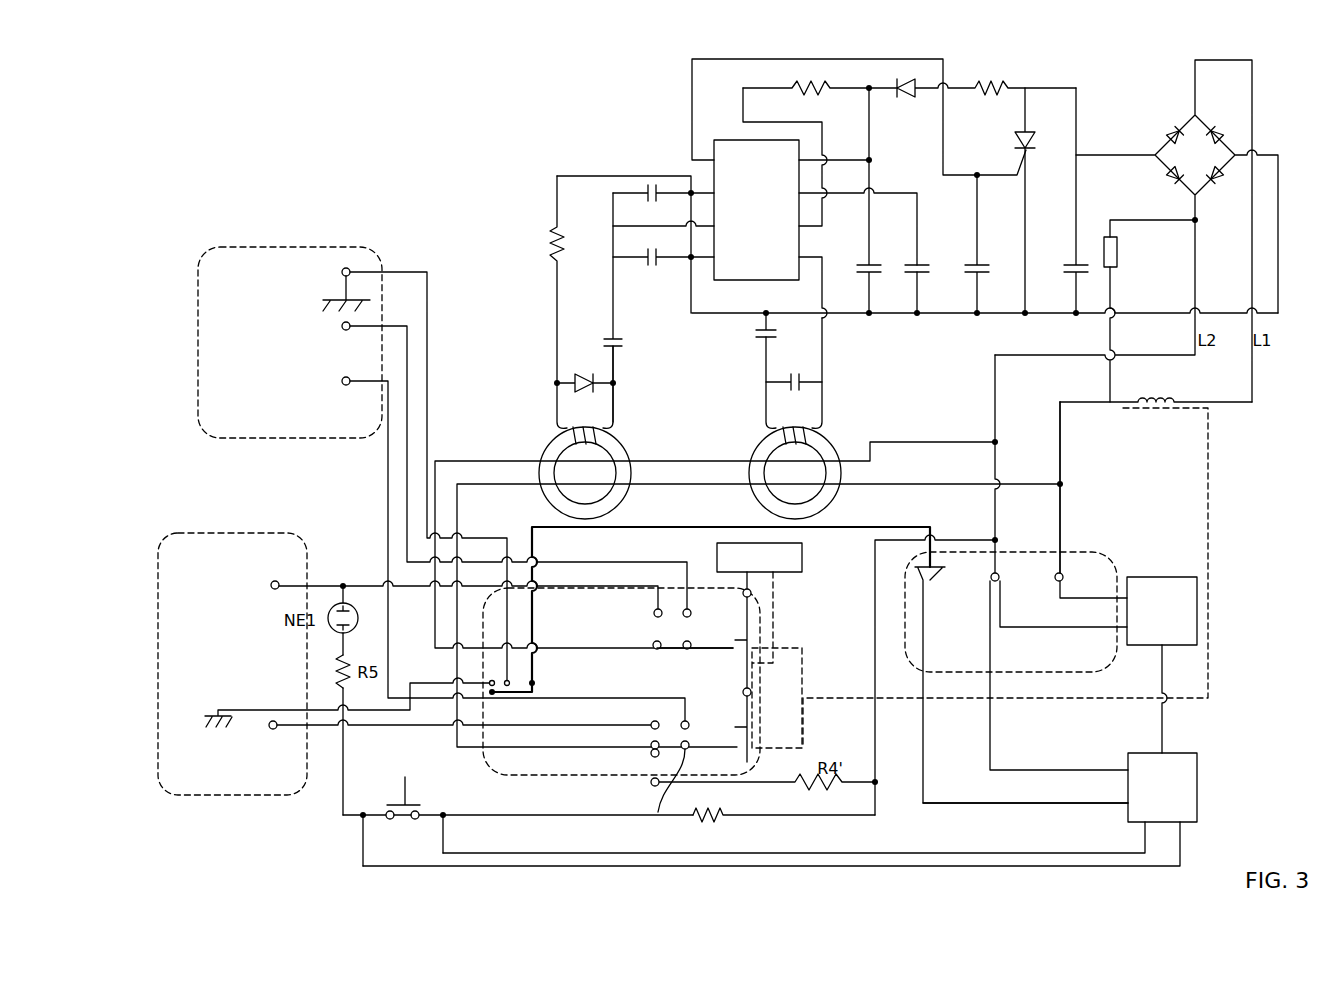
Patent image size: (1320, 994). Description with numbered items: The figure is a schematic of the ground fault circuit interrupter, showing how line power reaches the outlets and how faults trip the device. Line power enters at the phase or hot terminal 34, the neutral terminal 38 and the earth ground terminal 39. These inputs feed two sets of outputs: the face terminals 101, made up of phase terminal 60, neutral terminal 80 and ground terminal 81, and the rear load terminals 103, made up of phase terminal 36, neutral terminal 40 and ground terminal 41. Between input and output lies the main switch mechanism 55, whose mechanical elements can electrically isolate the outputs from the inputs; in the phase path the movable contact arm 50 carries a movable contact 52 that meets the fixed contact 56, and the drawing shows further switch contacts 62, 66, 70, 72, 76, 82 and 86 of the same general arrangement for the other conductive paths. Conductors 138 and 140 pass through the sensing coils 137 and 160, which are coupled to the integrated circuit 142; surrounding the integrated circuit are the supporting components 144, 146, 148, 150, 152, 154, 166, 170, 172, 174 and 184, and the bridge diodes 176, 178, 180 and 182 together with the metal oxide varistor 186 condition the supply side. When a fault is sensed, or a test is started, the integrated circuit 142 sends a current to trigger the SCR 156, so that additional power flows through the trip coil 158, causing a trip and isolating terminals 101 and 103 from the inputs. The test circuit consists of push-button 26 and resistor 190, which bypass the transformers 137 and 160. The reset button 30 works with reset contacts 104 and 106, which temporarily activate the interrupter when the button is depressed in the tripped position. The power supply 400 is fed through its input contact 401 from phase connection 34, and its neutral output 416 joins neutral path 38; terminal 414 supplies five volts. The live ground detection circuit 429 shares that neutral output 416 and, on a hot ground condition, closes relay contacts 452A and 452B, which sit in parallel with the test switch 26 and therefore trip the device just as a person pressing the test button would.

The test switch 26 is at (410, 798).
The reset button 30 is at (784, 576).
The phase line input terminal 34 is at (1063, 574).
The load phase terminal 36 is at (272, 730).
The neutral line input terminal 38 is at (1000, 560).
The earth ground terminal 39 is at (932, 582).
The load neutral terminal 40 is at (272, 580).
The load ground terminal 41 is at (210, 708).
The contact arm 50 is at (737, 749).
The movable contact 52 is at (651, 746).
The main switch mechanism 55 is at (768, 692).
The fixed contact 56 is at (653, 721).
The face phase terminal 60 is at (342, 384).
The conductor 62 is at (656, 814).
The contact 66 is at (689, 723).
The contact arm 70 is at (733, 649).
The contact 72 is at (652, 644).
The contact 76 is at (652, 611).
The face neutral terminal 80 is at (342, 329).
The face ground terminal 81 is at (342, 275).
The contact 82 is at (691, 643).
The contact 86 is at (691, 611).
The face terminals 101 is at (262, 246).
The load terminals 103 is at (217, 533).
The reset contact 104 is at (651, 754).
The reset contact 106 is at (651, 783).
The coil 137 is at (548, 434).
The phase conductor 138 is at (522, 485).
The neutral conductor 140 is at (500, 460).
The integrated circuit 142 is at (712, 158).
The diode 144 is at (586, 378).
The capacitor 146 is at (625, 345).
The capacitor 148 is at (651, 268).
The capacitor 150 is at (651, 186).
The resistor 152 is at (552, 240).
The capacitor 154 is at (914, 282).
The SCR 156 is at (1036, 140).
The trip coil 158 is at (1152, 412).
The coil 160 is at (755, 445).
The resistor 166 is at (806, 82).
The diode 170 is at (905, 80).
The capacitor 172 is at (867, 282).
The capacitor 174 is at (974, 282).
The bridge diode 176 is at (1221, 132).
The bridge diode 178 is at (1171, 127).
The bridge diode 180 is at (1168, 180).
The bridge diode 182 is at (1213, 183).
The capacitor 184 is at (1073, 282).
The metal oxide varistor 186 is at (1118, 258).
The resistor 190 is at (722, 818).
The power supply 400 is at (1162, 578).
The input terminal 401 is at (1062, 550).
The five volt terminal 414 is at (1165, 754).
The neutral terminal 416 is at (993, 562).
The live ground detection circuit 429 is at (1127, 809).
The relay contact 452A is at (360, 818).
The relay contact 452B is at (445, 818).